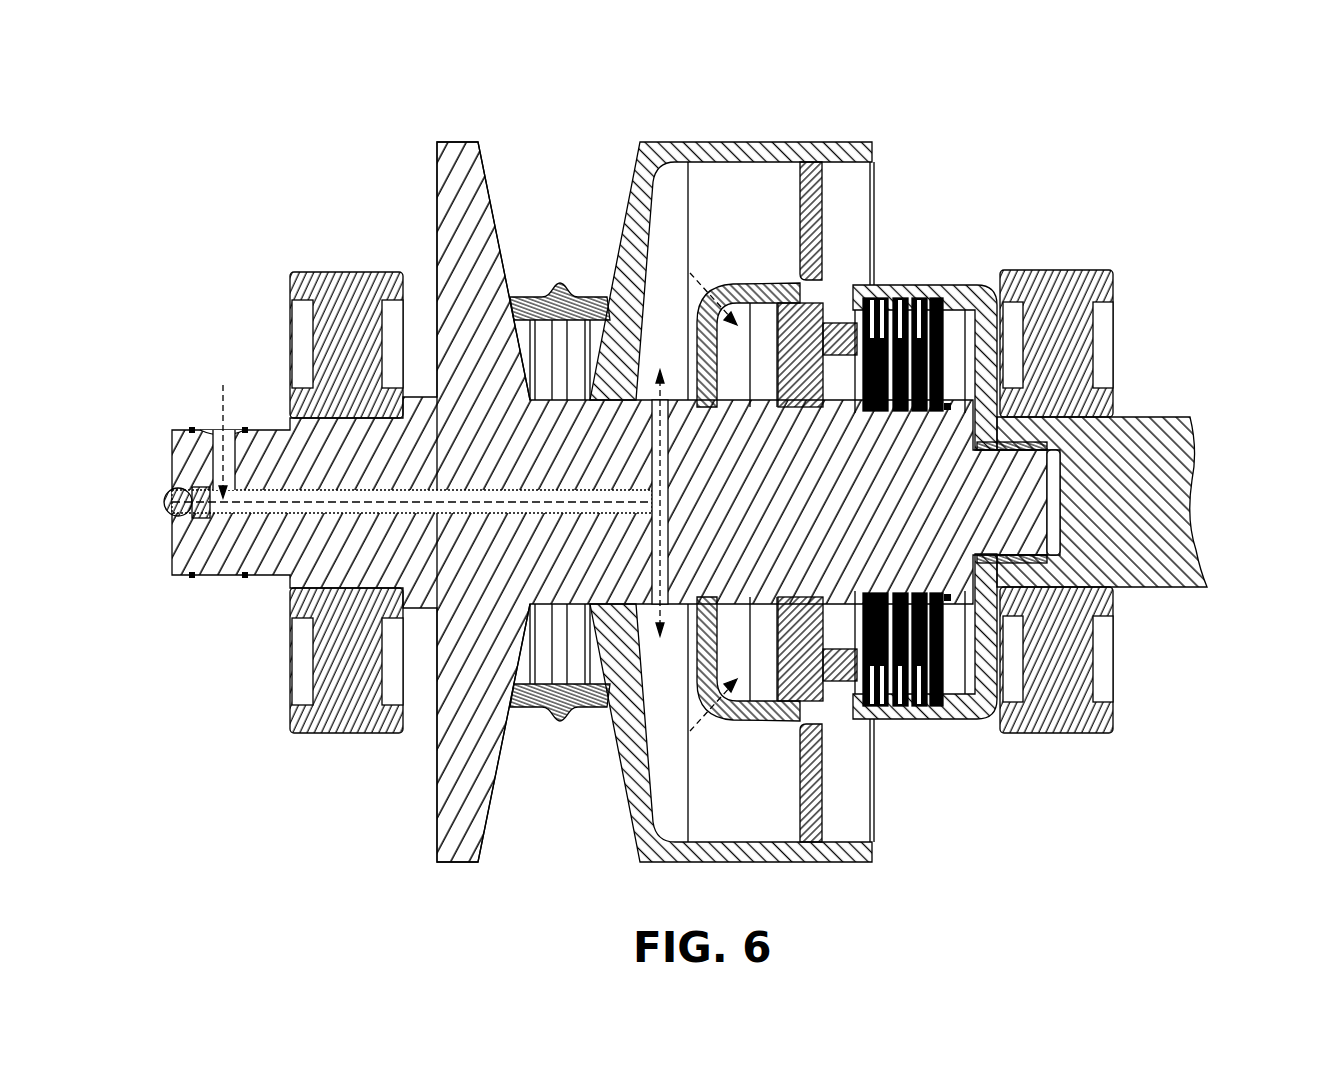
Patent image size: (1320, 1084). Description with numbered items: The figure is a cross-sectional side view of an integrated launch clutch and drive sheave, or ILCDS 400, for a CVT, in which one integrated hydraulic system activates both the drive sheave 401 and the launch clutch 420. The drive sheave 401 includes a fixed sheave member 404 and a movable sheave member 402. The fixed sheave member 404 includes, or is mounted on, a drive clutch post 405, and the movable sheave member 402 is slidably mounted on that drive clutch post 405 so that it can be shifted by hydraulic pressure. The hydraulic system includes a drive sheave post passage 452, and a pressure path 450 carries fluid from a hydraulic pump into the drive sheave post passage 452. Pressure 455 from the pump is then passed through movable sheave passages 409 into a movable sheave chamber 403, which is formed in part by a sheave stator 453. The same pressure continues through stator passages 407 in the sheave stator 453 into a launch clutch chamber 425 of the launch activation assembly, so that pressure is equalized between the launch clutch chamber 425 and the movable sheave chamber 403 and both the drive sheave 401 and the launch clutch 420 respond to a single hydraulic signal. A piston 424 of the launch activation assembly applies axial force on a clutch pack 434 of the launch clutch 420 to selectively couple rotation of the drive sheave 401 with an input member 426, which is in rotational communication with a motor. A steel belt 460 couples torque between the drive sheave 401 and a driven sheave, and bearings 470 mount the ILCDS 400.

The ILCDS 400 is at (291, 148).
The drive sheave 401 is at (420, 92).
The movable sheave member 402 is at (668, 172).
The movable sheave chamber 403 is at (773, 178).
The fixed sheave member 404 is at (480, 187).
The drive clutch post 405 is at (470, 578).
The stator passages 407 is at (737, 318).
The movable sheave passages 409 is at (652, 425).
The launch clutch 420 is at (778, 778).
The piston 424 is at (835, 345).
The launch clutch chamber 425 is at (735, 343).
The input member 426 is at (1165, 545).
The clutch pack 434 is at (938, 723).
The pressure path 450 is at (218, 460).
The drive sheave post passage 452 is at (283, 562).
The sheave stator 453 is at (815, 233).
The pressure 455 is at (225, 412).
The steel belt 460 is at (566, 290).
The bearings 470 is at (1085, 285).